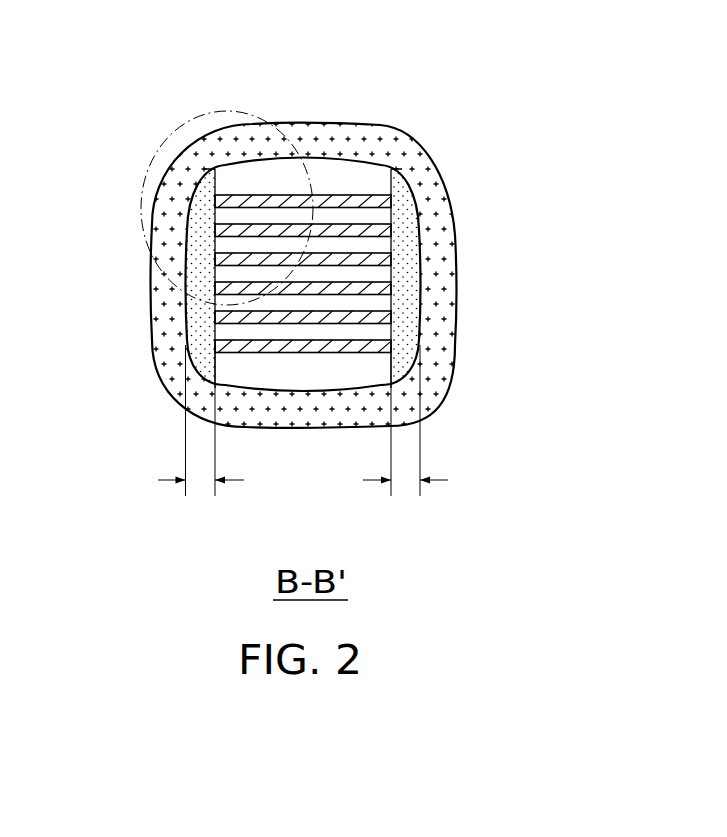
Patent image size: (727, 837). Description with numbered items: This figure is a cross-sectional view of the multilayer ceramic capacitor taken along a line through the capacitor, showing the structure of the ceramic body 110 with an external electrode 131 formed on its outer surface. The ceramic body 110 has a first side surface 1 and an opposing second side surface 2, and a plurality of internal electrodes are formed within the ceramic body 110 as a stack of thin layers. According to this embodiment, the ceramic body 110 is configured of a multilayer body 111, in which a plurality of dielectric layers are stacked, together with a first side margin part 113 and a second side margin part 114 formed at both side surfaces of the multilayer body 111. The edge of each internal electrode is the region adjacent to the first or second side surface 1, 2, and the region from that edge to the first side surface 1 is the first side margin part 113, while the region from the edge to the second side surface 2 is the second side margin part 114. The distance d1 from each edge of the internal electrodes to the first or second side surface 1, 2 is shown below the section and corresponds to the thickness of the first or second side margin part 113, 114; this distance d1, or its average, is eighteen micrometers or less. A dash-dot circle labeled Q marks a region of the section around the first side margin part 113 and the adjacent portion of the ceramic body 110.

The first side surface 1 is at (182, 307).
The second side surface 2 is at (426, 259).
The ceramic body 110 is at (303, 375).
The multilayer body 111 is at (313, 156).
The first side margin part 113 is at (203, 193).
The second side margin part 114 is at (402, 208).
The external electrode 131 is at (432, 210).
The enlarged region indicator Q is at (143, 180).
The distance d1 is at (303, 434).